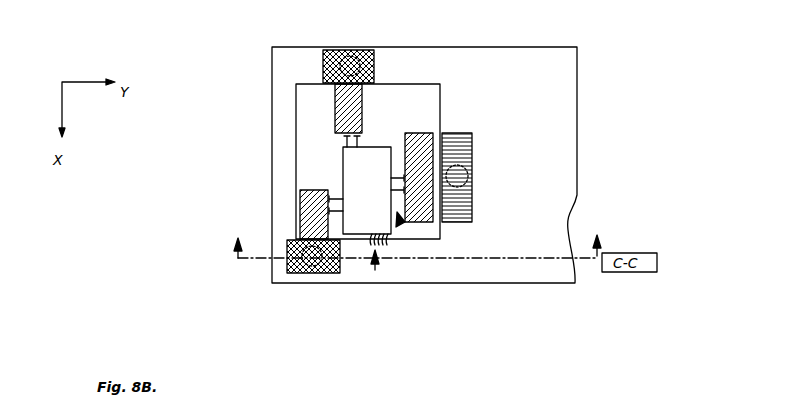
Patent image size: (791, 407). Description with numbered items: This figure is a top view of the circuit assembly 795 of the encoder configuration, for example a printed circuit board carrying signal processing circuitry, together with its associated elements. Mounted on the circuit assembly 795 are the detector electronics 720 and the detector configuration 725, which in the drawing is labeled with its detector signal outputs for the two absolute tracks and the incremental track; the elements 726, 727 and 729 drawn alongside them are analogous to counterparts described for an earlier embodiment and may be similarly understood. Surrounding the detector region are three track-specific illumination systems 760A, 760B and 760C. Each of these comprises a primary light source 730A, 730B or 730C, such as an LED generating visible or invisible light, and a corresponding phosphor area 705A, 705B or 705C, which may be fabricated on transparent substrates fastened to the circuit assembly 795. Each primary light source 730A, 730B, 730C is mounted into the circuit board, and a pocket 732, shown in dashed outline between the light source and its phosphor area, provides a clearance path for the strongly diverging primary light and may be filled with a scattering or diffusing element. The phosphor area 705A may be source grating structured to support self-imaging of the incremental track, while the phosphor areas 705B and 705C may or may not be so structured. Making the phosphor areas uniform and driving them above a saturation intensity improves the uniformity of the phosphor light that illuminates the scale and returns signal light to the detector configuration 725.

The detector electronics 720 is at (440, 84).
The detector configuration 725 is at (405, 162).
The detector 726 is at (385, 147).
The direction arrow 727 is at (401, 225).
The direction arrow 729 is at (375, 270).
The pocket 732 is at (372, 54).
The circuit assembly 795 is at (568, 218).
The phosphor area 705A is at (472, 197).
The phosphor area 705B is at (292, 274).
The phosphor area 705C is at (323, 60).
The primary light source 730A is at (472, 150).
The primary light source 730B is at (315, 274).
The primary light source 730C is at (330, 49).
The track-specific illumination system 760A is at (546, 160).
The track-specific illumination system 760B is at (212, 262).
The track-specific illumination system 760C is at (260, 90).